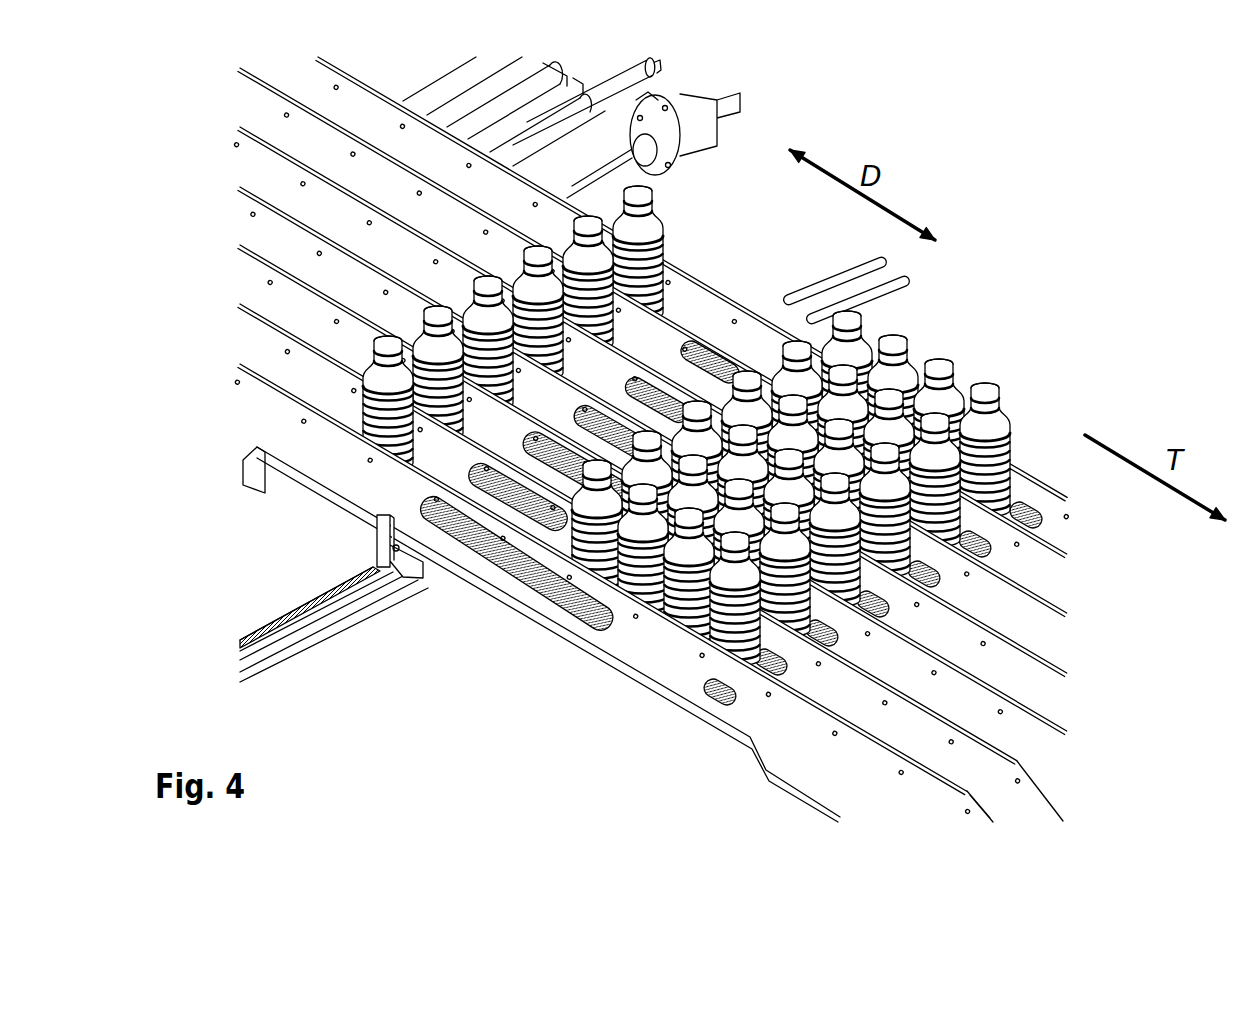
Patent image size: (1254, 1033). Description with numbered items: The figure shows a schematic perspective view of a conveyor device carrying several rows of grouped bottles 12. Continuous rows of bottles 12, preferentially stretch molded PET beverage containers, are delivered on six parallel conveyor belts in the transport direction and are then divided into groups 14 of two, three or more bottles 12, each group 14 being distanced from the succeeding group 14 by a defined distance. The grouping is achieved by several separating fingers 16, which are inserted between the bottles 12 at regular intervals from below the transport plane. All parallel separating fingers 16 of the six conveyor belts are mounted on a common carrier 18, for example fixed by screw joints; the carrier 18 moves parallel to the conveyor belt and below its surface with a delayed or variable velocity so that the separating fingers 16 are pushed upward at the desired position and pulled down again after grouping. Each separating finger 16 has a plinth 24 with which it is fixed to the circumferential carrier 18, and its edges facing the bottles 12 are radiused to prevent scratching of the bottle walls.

The bottles 12 is at (993, 417).
The groups 14 is at (598, 694).
The separating fingers 16 is at (680, 312).
The carrier 18 is at (267, 630).
The plinth 24 is at (383, 598).